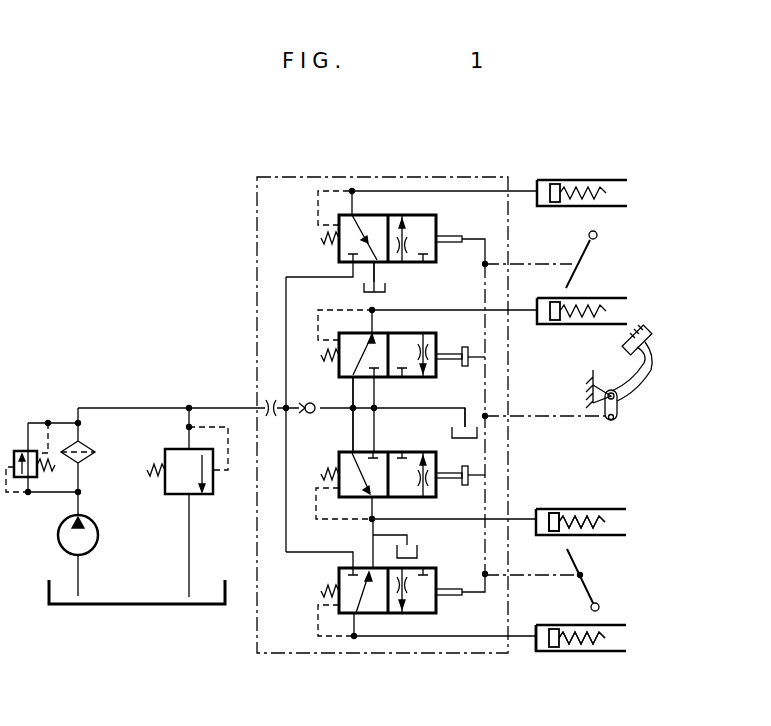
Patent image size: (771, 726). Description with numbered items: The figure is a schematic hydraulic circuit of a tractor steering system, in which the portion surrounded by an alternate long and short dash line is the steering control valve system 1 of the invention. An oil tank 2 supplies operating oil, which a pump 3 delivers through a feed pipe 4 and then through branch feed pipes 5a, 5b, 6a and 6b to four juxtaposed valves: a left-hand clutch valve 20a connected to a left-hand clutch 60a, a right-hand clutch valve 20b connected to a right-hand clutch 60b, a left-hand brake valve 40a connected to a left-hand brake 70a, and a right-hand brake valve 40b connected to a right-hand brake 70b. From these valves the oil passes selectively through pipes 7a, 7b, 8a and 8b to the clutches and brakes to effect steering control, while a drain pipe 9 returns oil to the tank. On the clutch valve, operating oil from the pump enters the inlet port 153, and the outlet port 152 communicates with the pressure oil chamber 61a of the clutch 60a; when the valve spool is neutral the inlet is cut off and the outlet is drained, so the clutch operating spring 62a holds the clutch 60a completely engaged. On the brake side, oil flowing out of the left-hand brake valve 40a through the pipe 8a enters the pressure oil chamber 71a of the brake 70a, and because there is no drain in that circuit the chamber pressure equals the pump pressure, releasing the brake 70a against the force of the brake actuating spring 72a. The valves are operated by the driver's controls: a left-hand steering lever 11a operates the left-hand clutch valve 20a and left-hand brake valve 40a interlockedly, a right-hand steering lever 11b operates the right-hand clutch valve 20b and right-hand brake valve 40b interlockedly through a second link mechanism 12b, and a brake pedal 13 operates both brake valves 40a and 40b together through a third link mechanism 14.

The steering control valve system 1 is at (473, 173).
The oil tank 2 is at (162, 604).
The pump 3 is at (98, 535).
The feed pipe 4 is at (123, 408).
The feed pipe 5a is at (286, 508).
The feed pipe 5b is at (286, 314).
The feed pipe 6a is at (351, 435).
The feed pipe 6b is at (352, 395).
The pipe 7a is at (518, 640).
The pipe 7b is at (526, 191).
The pipe 8a is at (525, 519).
The pipe 8b is at (525, 310).
The drain pipe 9 is at (382, 273).
The left-hand steering lever 11a is at (599, 605).
The right-hand steering lever 11b is at (596, 243).
The second link mechanism 12b is at (493, 259).
The brake pedal 13 is at (633, 371).
The third link mechanism 14 is at (531, 428).
The left-hand clutch valve 20a is at (436, 613).
The right-hand clutch valve 20b is at (436, 216).
The left-hand brake valve 40a is at (431, 497).
The right-hand brake valve 40b is at (436, 334).
The left-hand clutch 60a is at (620, 669).
The right-hand clutch 60b is at (583, 175).
The pressure oil chamber 61a is at (543, 626).
The clutch operating spring 62a is at (590, 650).
The left-hand brake 70a is at (615, 501).
The right-hand brake 70b is at (605, 290).
The pressure oil chamber 71a is at (543, 522).
The brake actuating spring 72a is at (602, 533).
The outlet port 152 is at (350, 210).
The inlet port 153 is at (350, 268).